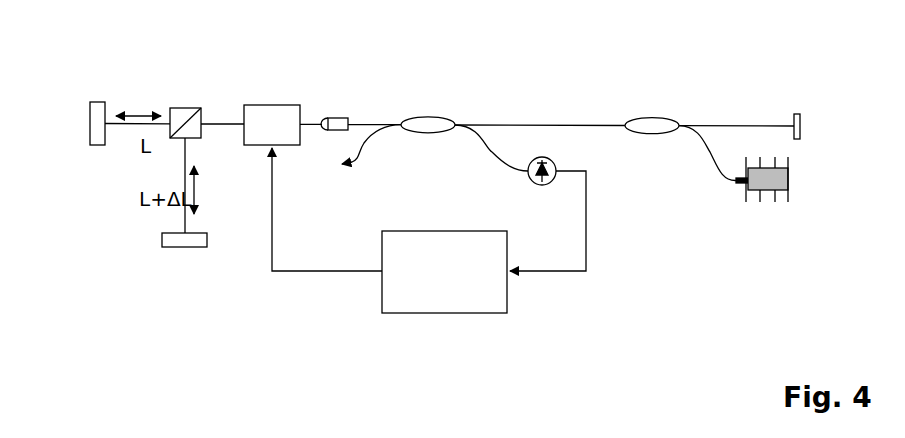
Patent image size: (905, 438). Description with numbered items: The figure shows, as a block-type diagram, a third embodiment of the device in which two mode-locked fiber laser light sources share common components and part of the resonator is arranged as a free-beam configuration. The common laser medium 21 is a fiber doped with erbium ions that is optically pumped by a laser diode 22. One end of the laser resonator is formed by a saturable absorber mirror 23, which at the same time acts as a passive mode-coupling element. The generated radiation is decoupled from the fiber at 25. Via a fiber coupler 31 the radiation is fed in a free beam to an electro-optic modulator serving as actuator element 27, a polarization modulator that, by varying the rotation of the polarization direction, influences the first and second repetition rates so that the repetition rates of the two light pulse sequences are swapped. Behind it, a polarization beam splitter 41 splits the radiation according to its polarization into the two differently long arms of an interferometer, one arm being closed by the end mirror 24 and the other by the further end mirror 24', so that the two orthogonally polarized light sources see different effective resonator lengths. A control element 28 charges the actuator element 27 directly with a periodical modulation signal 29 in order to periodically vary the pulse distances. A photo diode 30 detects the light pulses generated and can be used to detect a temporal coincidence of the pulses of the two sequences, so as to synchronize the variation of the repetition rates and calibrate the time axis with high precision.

The laser medium 21 is at (547, 123).
The laser diode 22 is at (770, 180).
The saturable absorber mirror (SESAM) 23 is at (798, 116).
The end mirror 24 is at (93, 106).
The further end mirror 24' is at (173, 225).
The decoupling point 25 is at (355, 160).
The actuator element 27 is at (273, 127).
The control element 28 is at (463, 292).
The modulation signal 29 is at (315, 271).
The photo diode 30 is at (548, 183).
The fiber coupler 31 is at (340, 122).
The polarization beam splitter 41 is at (180, 112).